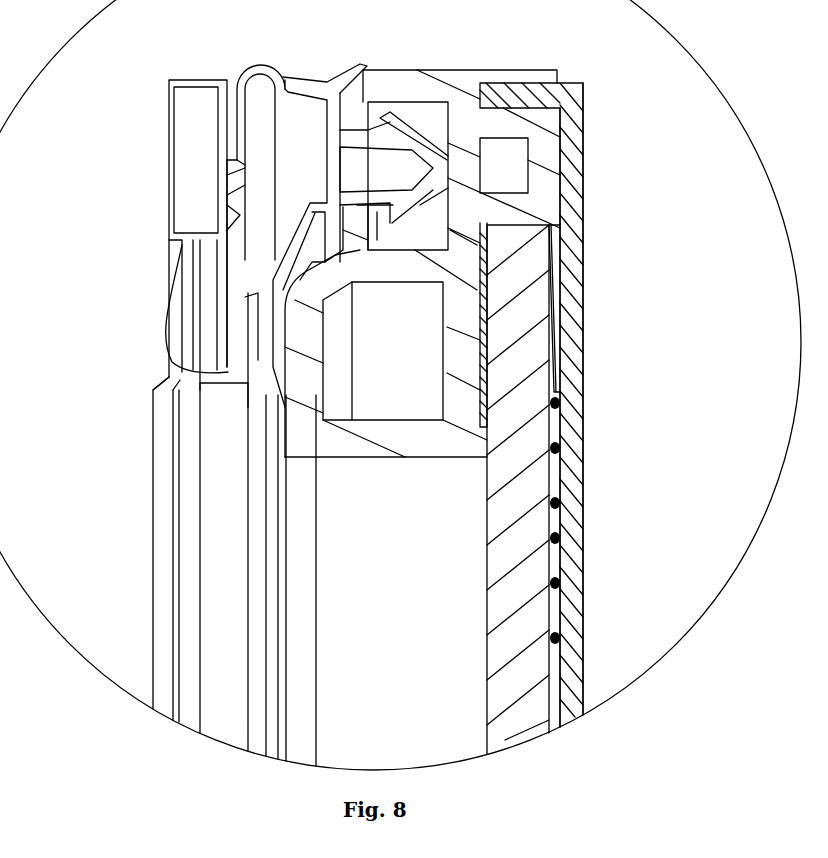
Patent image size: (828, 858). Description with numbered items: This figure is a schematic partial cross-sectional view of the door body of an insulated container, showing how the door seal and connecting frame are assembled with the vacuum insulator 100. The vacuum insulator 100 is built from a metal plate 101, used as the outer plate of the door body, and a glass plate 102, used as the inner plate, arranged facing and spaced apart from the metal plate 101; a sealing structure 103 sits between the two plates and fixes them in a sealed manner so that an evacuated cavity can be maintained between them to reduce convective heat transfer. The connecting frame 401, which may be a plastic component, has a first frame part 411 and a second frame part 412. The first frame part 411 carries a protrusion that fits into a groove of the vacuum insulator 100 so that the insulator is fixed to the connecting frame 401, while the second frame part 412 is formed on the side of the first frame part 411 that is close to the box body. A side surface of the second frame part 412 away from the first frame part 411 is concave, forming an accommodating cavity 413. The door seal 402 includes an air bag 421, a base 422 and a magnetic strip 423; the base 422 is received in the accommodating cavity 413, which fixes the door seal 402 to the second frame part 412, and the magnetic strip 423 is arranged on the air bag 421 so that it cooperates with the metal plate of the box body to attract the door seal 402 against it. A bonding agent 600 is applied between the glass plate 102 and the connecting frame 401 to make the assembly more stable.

The vacuum insulator 100 is at (579, 418).
The metal plate 101 is at (575, 272).
The glass plate 102 is at (528, 358).
The sealing structure 103 is at (557, 315).
The connecting frame 401 is at (481, 62).
The door seal 402 is at (217, 64).
The first frame part 411 is at (547, 157).
The second frame part 412 is at (398, 80).
The accommodating cavity 413 is at (432, 112).
The air bag 421 is at (290, 80).
The base 422 is at (423, 172).
The magnetic strip 423 is at (185, 158).
The bonding agent 600 is at (485, 357).